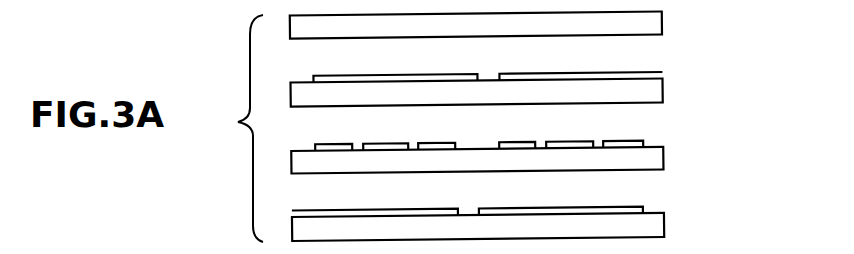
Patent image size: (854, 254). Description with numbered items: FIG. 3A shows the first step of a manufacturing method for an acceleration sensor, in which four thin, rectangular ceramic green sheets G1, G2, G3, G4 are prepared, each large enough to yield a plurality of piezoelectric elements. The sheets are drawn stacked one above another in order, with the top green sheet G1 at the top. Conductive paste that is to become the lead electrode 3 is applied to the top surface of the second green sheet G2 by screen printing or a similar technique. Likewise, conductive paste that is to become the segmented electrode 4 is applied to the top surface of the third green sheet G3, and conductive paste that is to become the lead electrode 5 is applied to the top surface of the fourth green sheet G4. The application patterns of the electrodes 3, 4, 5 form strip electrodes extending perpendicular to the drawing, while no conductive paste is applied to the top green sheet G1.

The first green sheet G1 is at (657, 22).
The second green sheet G2 is at (657, 87).
The third green sheet G3 is at (658, 153).
The fourth green sheet G4 is at (658, 220).
The lead electrode 3 is at (405, 76).
The segmented electrode 4 is at (382, 142).
The lead electrode 5 is at (362, 212).